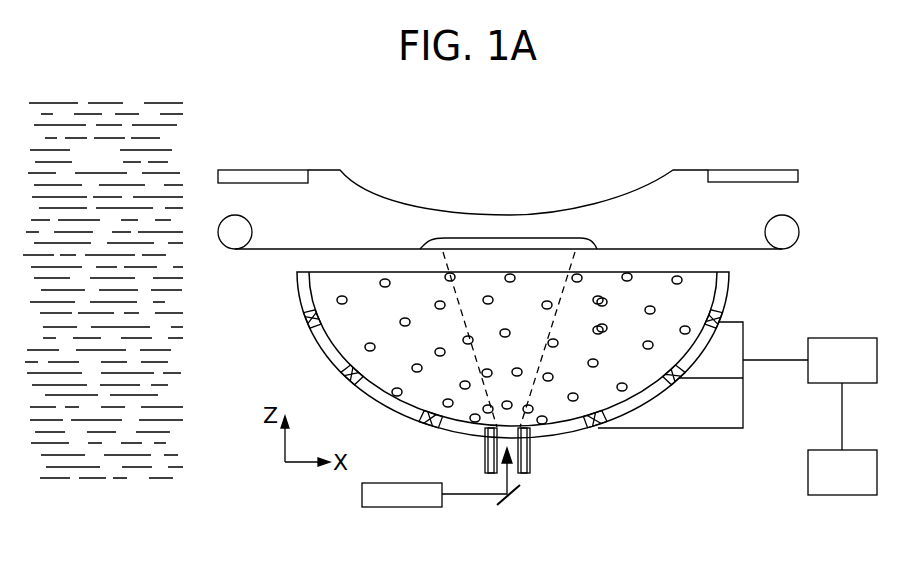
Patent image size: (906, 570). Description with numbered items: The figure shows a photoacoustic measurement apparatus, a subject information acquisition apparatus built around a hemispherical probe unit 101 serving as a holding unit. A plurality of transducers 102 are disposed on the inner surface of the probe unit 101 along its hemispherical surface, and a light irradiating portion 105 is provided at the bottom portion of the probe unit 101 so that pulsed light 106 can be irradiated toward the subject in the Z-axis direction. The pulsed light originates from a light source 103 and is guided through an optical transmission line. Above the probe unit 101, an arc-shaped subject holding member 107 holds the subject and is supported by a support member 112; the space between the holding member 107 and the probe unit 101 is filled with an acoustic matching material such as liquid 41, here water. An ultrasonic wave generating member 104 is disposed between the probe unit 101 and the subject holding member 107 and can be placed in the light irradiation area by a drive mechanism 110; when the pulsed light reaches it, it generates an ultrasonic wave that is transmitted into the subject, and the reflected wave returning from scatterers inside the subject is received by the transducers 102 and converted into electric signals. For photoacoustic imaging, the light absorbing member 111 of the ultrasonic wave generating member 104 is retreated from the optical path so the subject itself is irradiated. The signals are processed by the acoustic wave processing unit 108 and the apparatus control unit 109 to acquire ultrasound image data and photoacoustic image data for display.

The liquid 41 is at (103, 290).
The probe unit 101 is at (328, 362).
The transducers 102 is at (598, 430).
The light source 103 is at (404, 509).
The ultrasonic wave generating member 104 is at (765, 252).
The light irradiating portion 105 is at (512, 432).
The pulsed light 106 is at (455, 291).
The subject holding member 107 is at (658, 182).
The acoustic wave processing unit 108 is at (859, 338).
The apparatus control unit 109 is at (859, 450).
The drive mechanism 110 is at (800, 232).
The light absorbing member 111 is at (507, 238).
The support member 112 is at (756, 170).